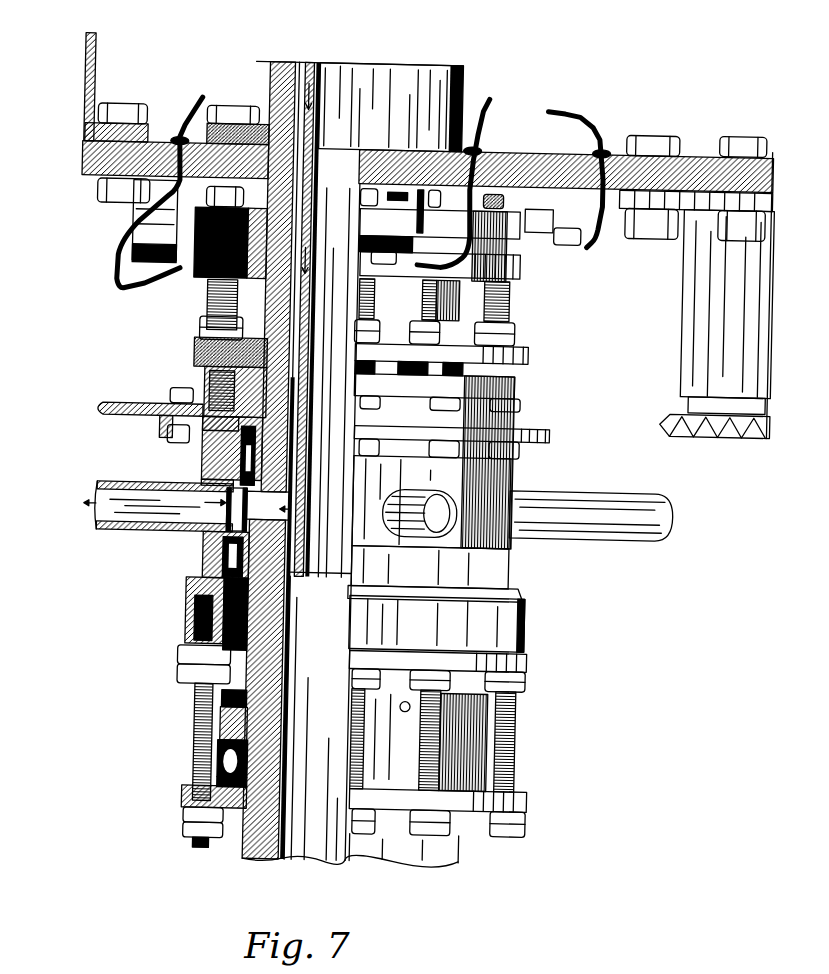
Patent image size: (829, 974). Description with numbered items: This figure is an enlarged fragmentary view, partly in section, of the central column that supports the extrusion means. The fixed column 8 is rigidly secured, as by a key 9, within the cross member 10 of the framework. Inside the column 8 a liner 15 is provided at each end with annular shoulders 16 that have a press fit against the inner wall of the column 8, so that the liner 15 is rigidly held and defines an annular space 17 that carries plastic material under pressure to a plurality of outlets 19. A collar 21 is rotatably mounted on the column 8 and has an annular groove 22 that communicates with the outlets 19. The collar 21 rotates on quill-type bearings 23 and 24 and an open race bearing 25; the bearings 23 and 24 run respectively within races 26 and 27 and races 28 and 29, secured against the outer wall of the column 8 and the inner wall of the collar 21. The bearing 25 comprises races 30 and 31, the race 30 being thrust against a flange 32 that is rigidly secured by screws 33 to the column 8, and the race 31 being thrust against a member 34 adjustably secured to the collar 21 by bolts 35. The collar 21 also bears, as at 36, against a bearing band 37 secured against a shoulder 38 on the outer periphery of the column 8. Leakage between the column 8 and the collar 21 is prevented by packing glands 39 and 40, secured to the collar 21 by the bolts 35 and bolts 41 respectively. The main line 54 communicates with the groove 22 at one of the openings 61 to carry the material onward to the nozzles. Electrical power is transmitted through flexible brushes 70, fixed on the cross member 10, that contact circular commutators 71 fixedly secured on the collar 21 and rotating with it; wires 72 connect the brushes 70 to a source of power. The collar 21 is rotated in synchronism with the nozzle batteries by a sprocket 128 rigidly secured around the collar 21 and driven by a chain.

The column 8 is at (421, 92).
The key 9 is at (254, 124).
The cross member 10 is at (684, 148).
The liner 15 is at (313, 65).
The annular shoulders 16 is at (295, 577).
The annular space 17 is at (293, 305).
The outlets 19 is at (280, 515).
The collar 21 is at (201, 473).
The annular groove 22 is at (235, 491).
The bearing 23 is at (256, 461).
The bearing 24 is at (218, 561).
The open race bearing 25 is at (223, 768).
The race 26 is at (259, 477).
The race 27 is at (206, 466).
The race 28 is at (244, 574).
The race 29 is at (208, 578).
The race 30 is at (223, 760).
The race 31 is at (223, 775).
The flange 32 is at (225, 731).
The screws 33 is at (251, 711).
The member 34 is at (187, 802).
The bolts 35 is at (194, 702).
The bearing point 36 is at (240, 496).
The bearing band 37 is at (214, 509).
The shoulder 38 is at (269, 505).
The packing gland 39 is at (247, 661).
The packing gland 40 is at (258, 321).
The bolts 41 is at (204, 307).
The main line 54 is at (101, 537).
The openings 61 is at (197, 538).
The flexible brushes 70 is at (175, 282).
The circular commutators 71 is at (520, 273).
The wires 72 is at (186, 97).
The sprocket 128 is at (131, 409).